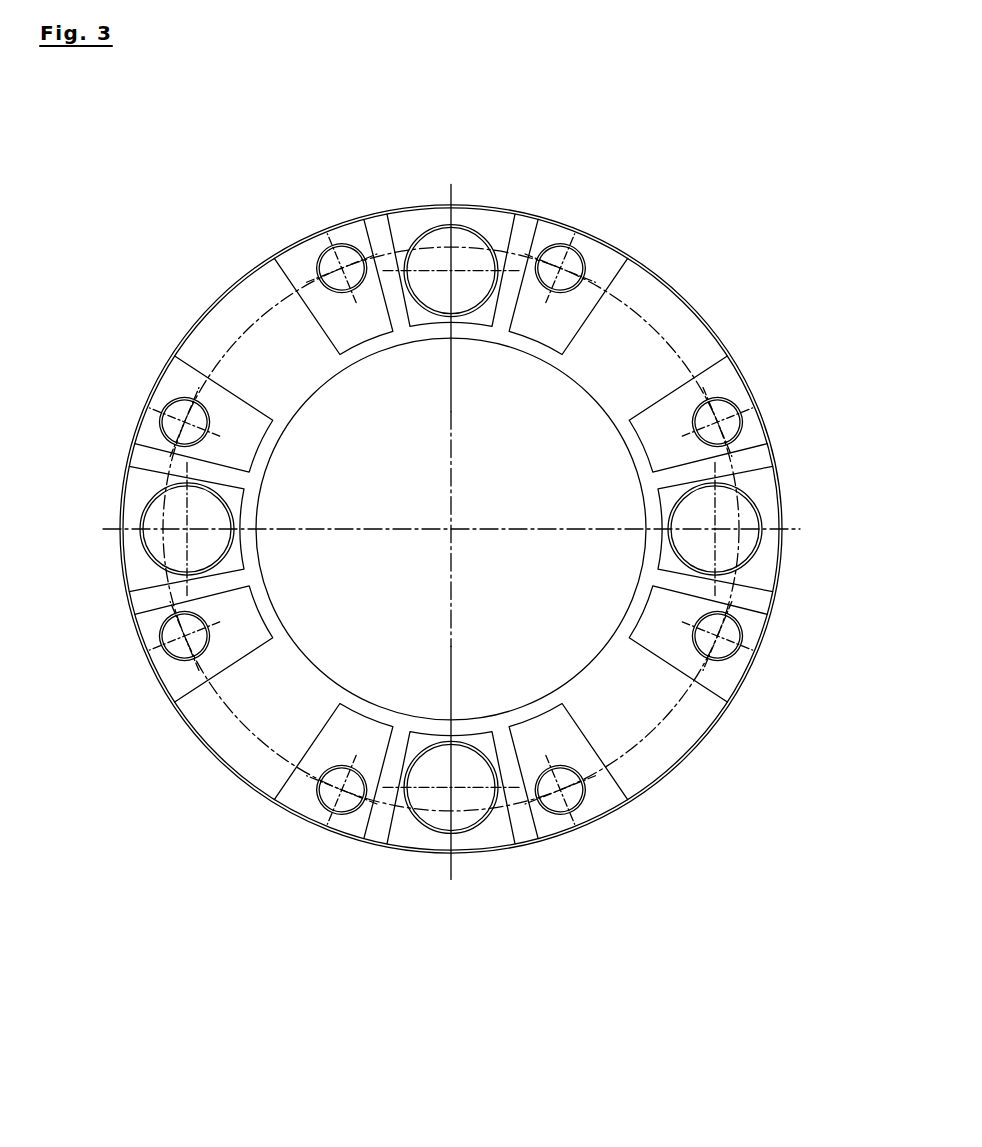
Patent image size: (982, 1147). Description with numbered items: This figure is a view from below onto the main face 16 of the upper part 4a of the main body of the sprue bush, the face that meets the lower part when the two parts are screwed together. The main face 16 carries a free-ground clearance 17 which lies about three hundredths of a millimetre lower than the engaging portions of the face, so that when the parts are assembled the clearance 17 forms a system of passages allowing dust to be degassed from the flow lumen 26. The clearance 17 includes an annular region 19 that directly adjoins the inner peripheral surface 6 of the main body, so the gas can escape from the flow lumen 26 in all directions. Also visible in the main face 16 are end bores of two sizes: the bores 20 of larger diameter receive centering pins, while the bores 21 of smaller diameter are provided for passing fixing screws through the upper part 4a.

The upper part 4a is at (317, 213).
The inner peripheral surface 6 is at (283, 490).
The main face 16 is at (608, 268).
The free-ground clearance 17 is at (655, 340).
The annular region 19 is at (555, 710).
The bores of larger diameter 20 is at (448, 790).
The bores of smaller diameter 21 is at (334, 790).
The flow lumen 26 is at (362, 582).